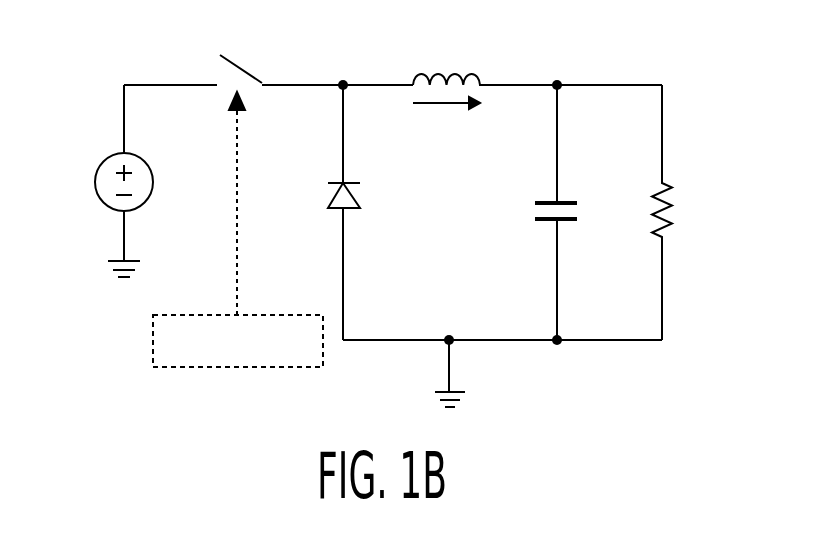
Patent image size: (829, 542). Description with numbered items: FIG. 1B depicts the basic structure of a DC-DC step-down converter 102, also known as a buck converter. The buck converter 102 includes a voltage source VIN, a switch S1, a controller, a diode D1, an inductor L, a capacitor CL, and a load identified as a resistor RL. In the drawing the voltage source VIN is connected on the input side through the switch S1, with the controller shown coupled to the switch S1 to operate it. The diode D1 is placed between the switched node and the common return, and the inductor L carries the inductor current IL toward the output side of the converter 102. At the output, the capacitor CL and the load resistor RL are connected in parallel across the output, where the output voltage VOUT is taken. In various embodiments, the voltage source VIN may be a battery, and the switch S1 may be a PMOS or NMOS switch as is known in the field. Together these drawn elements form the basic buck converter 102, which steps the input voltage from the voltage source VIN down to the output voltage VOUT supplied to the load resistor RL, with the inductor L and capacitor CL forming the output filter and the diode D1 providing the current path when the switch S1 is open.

The DC-DC step-down converter 102 is at (384, 209).
The voltage source VIN is at (134, 181).
The switch S1 is at (316, 61).
The inductor L is at (537, 63).
The inductor current IL is at (446, 123).
The diode D1 is at (362, 212).
The capacitor CL is at (537, 212).
The resistor RL is at (681, 212).
The output voltage VOUT is at (682, 74).